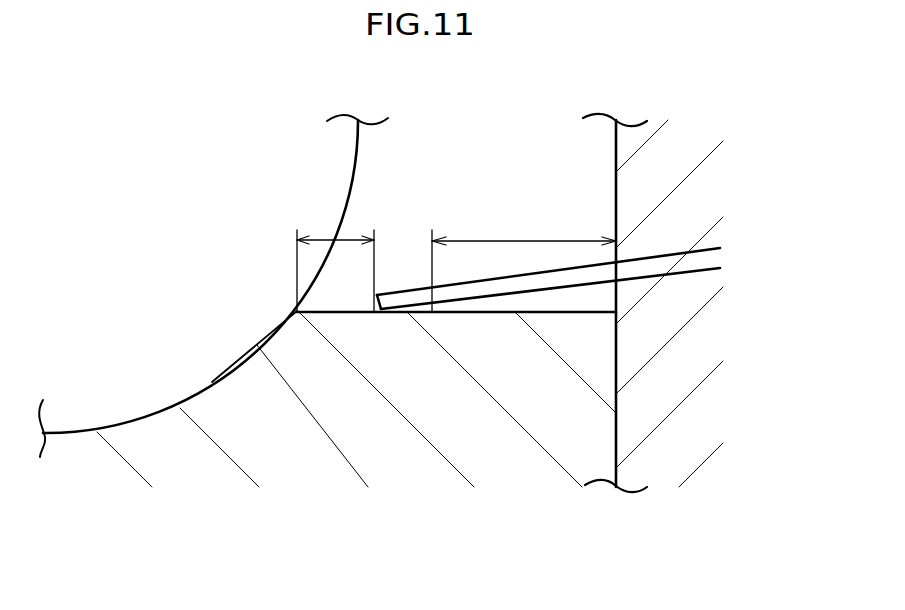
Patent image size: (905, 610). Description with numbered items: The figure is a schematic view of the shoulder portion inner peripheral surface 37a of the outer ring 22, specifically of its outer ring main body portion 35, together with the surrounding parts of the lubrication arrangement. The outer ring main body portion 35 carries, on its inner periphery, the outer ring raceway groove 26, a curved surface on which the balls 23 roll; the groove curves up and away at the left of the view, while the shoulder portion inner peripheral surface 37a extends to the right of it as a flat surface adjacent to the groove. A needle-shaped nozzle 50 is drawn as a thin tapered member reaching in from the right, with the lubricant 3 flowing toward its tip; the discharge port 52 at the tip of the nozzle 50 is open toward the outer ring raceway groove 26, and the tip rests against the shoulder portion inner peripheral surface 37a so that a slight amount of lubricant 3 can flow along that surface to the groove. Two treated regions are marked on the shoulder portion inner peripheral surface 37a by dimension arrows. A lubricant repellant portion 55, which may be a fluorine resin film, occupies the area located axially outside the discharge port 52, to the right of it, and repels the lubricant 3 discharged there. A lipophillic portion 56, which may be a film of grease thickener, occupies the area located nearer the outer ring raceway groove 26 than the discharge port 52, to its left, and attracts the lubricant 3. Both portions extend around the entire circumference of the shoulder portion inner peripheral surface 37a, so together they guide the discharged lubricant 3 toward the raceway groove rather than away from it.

The lubricant 3 is at (722, 258).
The outer ring 22 is at (262, 403).
The outer ring main body portion 35 is at (356, 454).
The balls 23 is at (83, 383).
The outer ring raceway groove 26 is at (212, 382).
The nozzle 50 is at (405, 292).
The discharge port 52 is at (376, 311).
The shoulder portion inner peripheral surface 37a is at (477, 311).
The lubricant repellant portion 55 is at (522, 239).
The lipophillic portion 56 is at (333, 248).